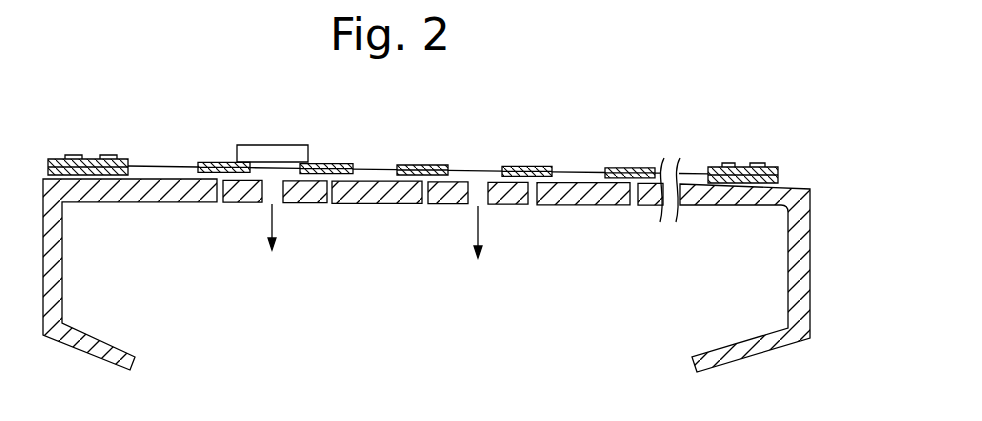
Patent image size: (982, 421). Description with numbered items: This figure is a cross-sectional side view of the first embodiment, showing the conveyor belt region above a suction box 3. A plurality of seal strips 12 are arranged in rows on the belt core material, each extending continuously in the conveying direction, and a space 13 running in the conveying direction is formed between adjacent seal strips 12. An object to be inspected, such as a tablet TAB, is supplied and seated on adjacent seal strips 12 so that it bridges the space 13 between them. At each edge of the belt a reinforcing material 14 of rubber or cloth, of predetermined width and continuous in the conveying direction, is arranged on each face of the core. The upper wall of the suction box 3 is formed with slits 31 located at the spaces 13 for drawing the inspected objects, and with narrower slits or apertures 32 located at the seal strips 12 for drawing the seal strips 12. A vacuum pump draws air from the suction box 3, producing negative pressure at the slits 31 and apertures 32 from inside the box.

The suction box 3 is at (810, 253).
The seal strip 12 is at (405, 158).
The space 13 is at (485, 167).
The reinforcing material 14 is at (763, 163).
The slit 31 is at (278, 190).
The slit or aperture 32 is at (211, 203).
The tablet TAB is at (243, 144).